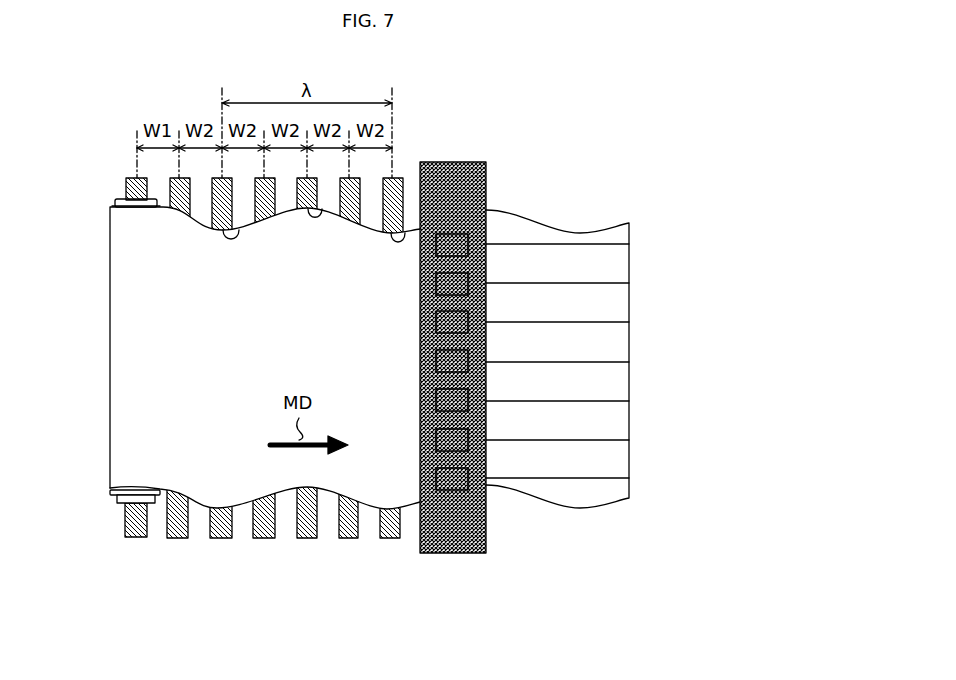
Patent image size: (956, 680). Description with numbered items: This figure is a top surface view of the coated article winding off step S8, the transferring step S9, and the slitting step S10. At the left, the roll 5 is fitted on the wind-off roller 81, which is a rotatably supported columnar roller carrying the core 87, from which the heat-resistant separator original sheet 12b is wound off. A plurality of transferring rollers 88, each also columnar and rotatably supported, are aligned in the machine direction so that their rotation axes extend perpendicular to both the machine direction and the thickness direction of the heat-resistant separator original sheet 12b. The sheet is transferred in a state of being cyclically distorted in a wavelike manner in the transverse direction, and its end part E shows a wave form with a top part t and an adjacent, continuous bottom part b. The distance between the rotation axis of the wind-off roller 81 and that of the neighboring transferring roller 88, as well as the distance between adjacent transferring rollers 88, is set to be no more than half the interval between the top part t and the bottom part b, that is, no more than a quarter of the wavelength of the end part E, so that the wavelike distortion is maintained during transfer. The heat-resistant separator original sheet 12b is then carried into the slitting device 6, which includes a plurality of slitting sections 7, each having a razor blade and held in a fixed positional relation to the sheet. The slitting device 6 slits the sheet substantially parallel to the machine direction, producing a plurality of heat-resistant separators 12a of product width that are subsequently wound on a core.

The roll 5 is at (107, 200).
The slitting device 6 is at (452, 554).
The slitting section 7 is at (436, 247).
The heat-resistant separator 12a is at (629, 262).
The heat-resistant separator original sheet 12b is at (114, 360).
The wind-off roller 81 is at (135, 539).
The core 87 is at (118, 498).
The transferring roller 88 is at (177, 539).
The coated article winding off step S8 is at (121, 172).
The transferring step S9 is at (403, 145).
The slitting step S10 is at (483, 146).
The bottom part b is at (236, 236).
The top part t is at (316, 214).
The end part E is at (373, 228).